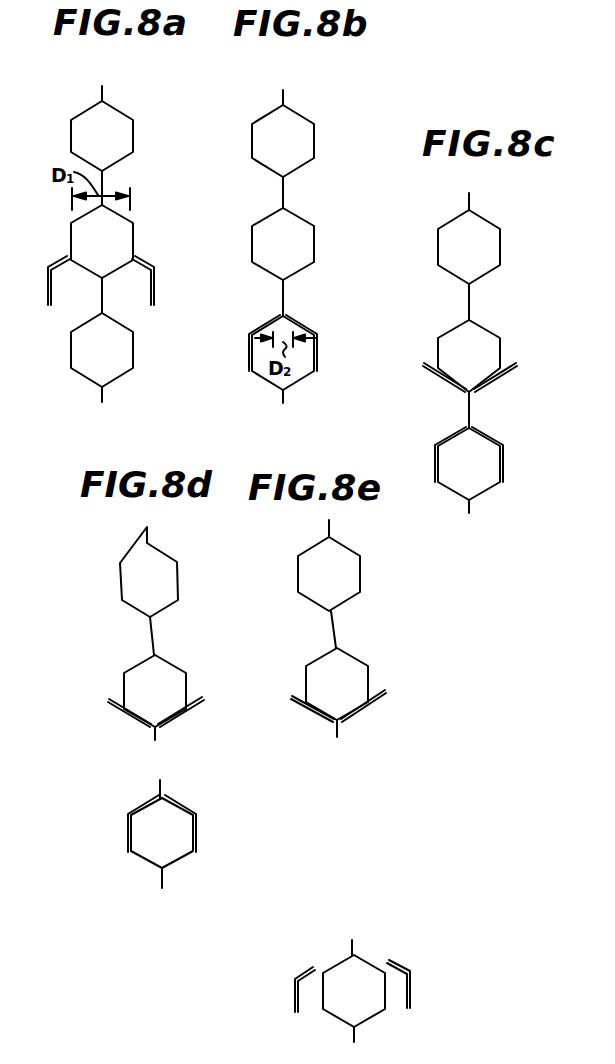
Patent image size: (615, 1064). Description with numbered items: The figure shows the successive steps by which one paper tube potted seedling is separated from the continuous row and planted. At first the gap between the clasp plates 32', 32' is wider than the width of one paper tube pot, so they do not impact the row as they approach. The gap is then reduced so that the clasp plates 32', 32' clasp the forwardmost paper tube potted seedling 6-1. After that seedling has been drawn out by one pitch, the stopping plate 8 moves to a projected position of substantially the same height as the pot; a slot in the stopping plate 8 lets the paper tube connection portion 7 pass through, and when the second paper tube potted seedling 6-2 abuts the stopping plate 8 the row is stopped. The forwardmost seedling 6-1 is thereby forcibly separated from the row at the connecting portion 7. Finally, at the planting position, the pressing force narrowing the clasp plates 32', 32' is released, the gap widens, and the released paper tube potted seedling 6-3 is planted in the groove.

In FIG. 8a, the forwardmost paper tube potted seedling 6-1 is at (118, 375).
In FIG. 8b, the forwardmost paper tube potted seedling 6-1 is at (300, 380).
In FIG. 8c, the forwardmost paper tube potted seedling 6-1 is at (490, 490).
In FIG. 8d, the forwardmost paper tube potted seedling 6-1 is at (178, 855).
In FIG. 8e, the forwardmost paper tube potted seedling 6-1 is at (363, 968).
In FIG. 8a, the second paper tube potted seedling 6-2 is at (122, 228).
In FIG. 8b, the second paper tube potted seedling 6-2 is at (308, 238).
In FIG. 8c, the second paper tube potted seedling 6-2 is at (446, 330).
In FIG. 8d, the second paper tube potted seedling 6-2 is at (180, 680).
In FIG. 8e, the second paper tube potted seedling 6-2 is at (365, 675).
In FIG. 8e, the paper tube potted seedling 6-3 is at (386, 970).
In FIG. 8a, the paper tube connection portion 7 is at (102, 298).
In FIG. 8b, the paper tube connection portion 7 is at (283, 297).
In FIG. 8c, the paper tube connection portion 7 is at (469, 405).
In FIG. 8d, the paper tube connection portion 7 is at (160, 790).
In FIG. 8e, the paper tube connection portion 7 is at (352, 947).
In FIG. 8c, the stopping plate 8 is at (439, 380).
In FIG. 8d, the stopping plate 8 is at (121, 713).
In FIG. 8e, the stopping plate 8 is at (306, 711).
In FIG. 8a, the clasp plates 32' is at (94, 303).
In FIG. 8b, the clasp plates 32' is at (282, 347).
In FIG. 8c, the clasp plates 32' is at (467, 454).
In FIG. 8d, the clasp plates 32' is at (170, 823).
In FIG. 8e, the clasp plates 32' is at (351, 973).